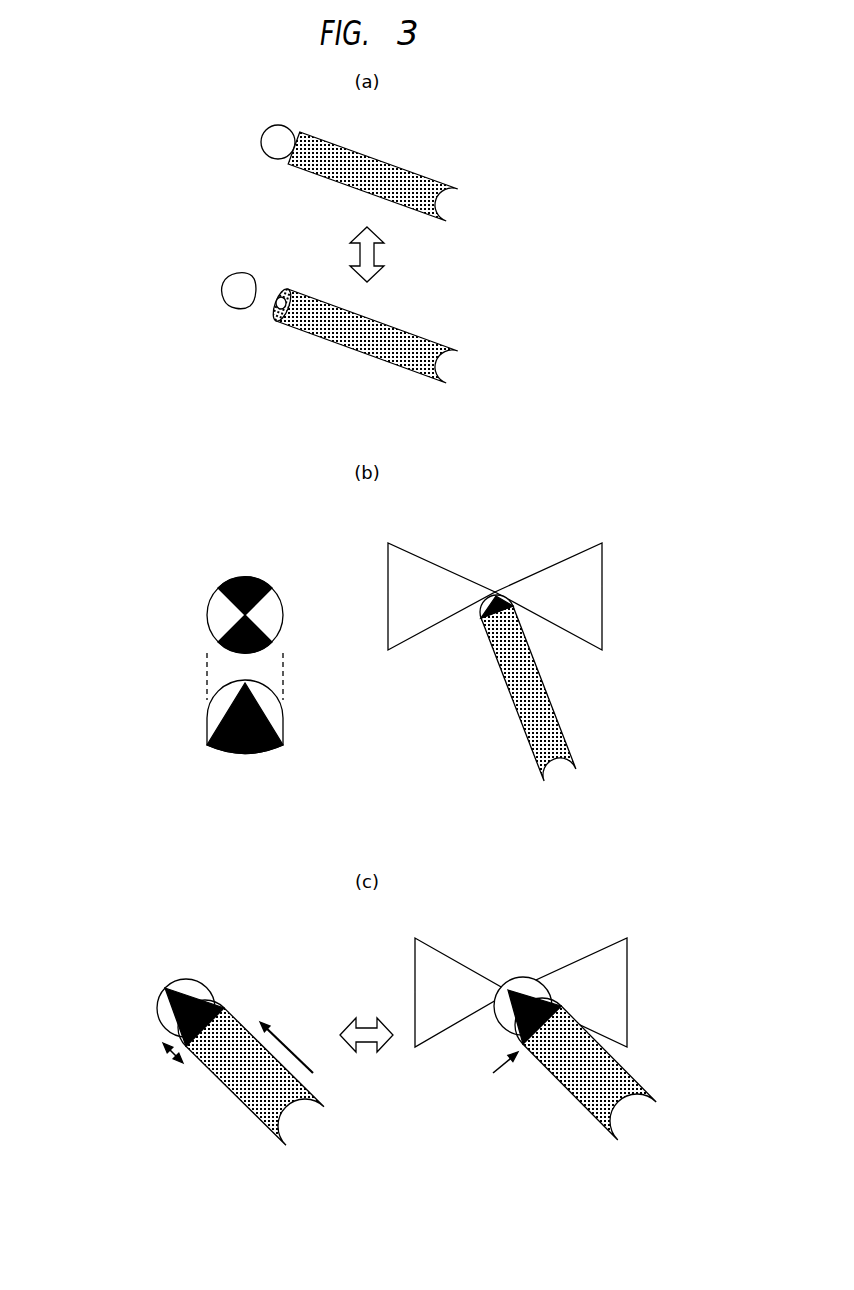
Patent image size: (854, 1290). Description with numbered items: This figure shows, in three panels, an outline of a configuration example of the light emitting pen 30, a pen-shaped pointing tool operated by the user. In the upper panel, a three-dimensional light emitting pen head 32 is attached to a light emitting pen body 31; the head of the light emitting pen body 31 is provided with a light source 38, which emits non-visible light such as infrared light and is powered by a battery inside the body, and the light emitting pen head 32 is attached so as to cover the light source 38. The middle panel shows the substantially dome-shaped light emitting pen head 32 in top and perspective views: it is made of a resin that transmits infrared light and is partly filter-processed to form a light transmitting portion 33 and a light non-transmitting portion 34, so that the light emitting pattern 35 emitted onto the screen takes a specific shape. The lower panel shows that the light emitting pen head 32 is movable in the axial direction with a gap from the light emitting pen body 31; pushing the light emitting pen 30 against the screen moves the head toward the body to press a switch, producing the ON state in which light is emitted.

The light emitting pen 30 is at (379, 627).
The light emitting pen body 31 is at (470, 205).
The light emitting pen head 32 is at (298, 581).
The light transmitting portion 33 is at (211, 607).
The light non-transmitting portion 34 is at (245, 577).
The light emitting pattern 35 is at (602, 570).
The light source 38 is at (275, 315).